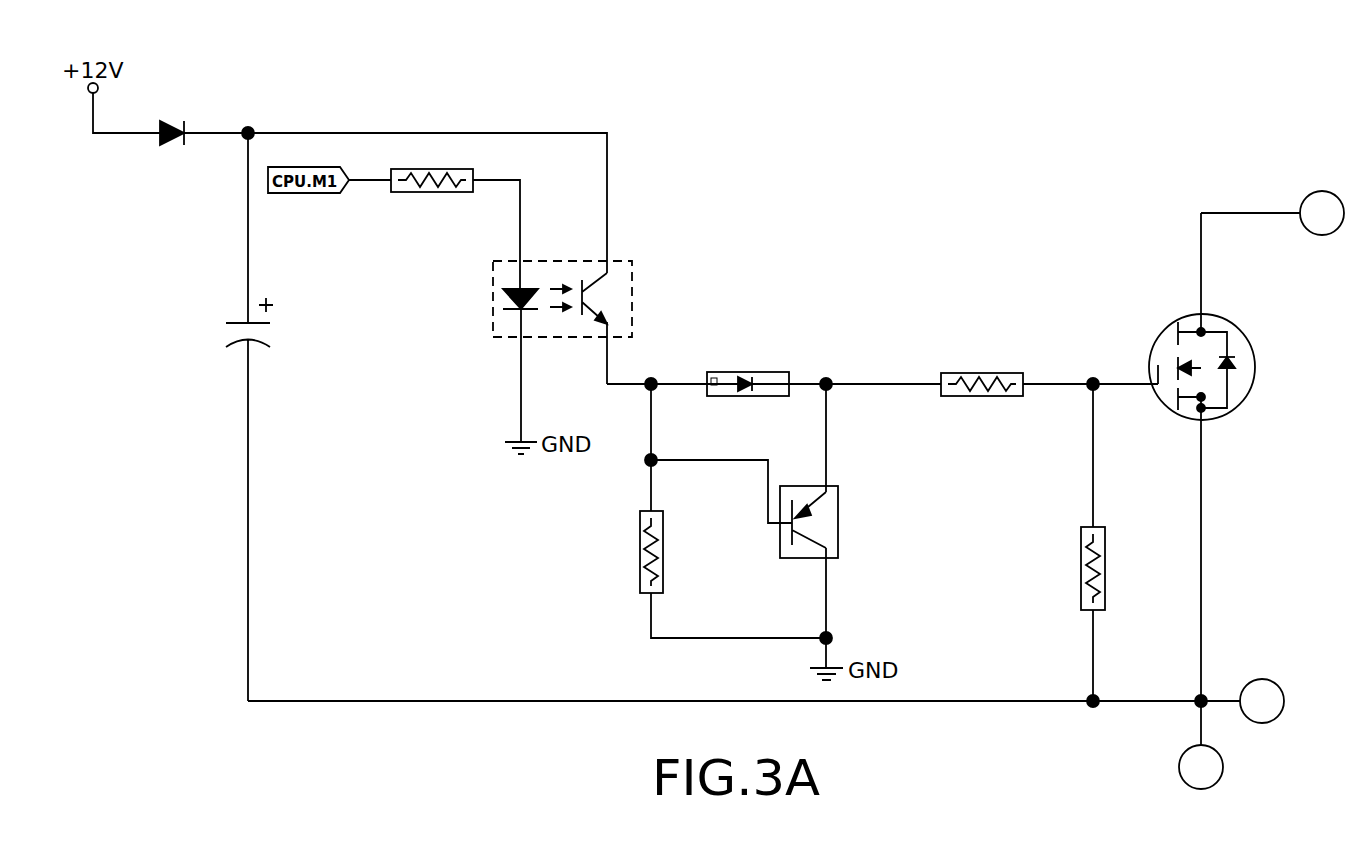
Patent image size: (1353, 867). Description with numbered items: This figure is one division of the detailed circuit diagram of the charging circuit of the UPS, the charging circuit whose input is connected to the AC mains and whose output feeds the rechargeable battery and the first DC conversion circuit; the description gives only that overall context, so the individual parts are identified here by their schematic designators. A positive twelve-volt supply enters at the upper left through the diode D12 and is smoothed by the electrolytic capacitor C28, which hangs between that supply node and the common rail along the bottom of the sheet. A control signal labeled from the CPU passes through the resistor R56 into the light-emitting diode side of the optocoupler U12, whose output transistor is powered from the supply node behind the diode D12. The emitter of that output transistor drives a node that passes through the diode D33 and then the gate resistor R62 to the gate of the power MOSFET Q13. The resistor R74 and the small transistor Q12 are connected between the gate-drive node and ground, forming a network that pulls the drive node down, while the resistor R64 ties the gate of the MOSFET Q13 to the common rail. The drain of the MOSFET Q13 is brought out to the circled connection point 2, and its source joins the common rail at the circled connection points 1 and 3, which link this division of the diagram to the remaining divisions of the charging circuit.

The diode 1N4148 D12 is at (173, 136).
The capacitor 47U/50V C28 is at (251, 417).
The resistor 1.5K R56 is at (429, 181).
The optocoupler 10101C U12 is at (524, 342).
The diode 1N4148WSM D33 is at (740, 388).
The resistor 47 ohm R62 is at (973, 385).
The resistor 20K R74 is at (719, 511).
The transistor 2907SM Q12 is at (848, 511).
The resistor 10K R64 is at (1001, 542).
The MOSFET IRF3205 Q13 is at (1155, 457).
The connector terminal 1 is at (1201, 745).
The connector terminal 2 is at (1272, 213).
The connector terminal 3 is at (1262, 701).